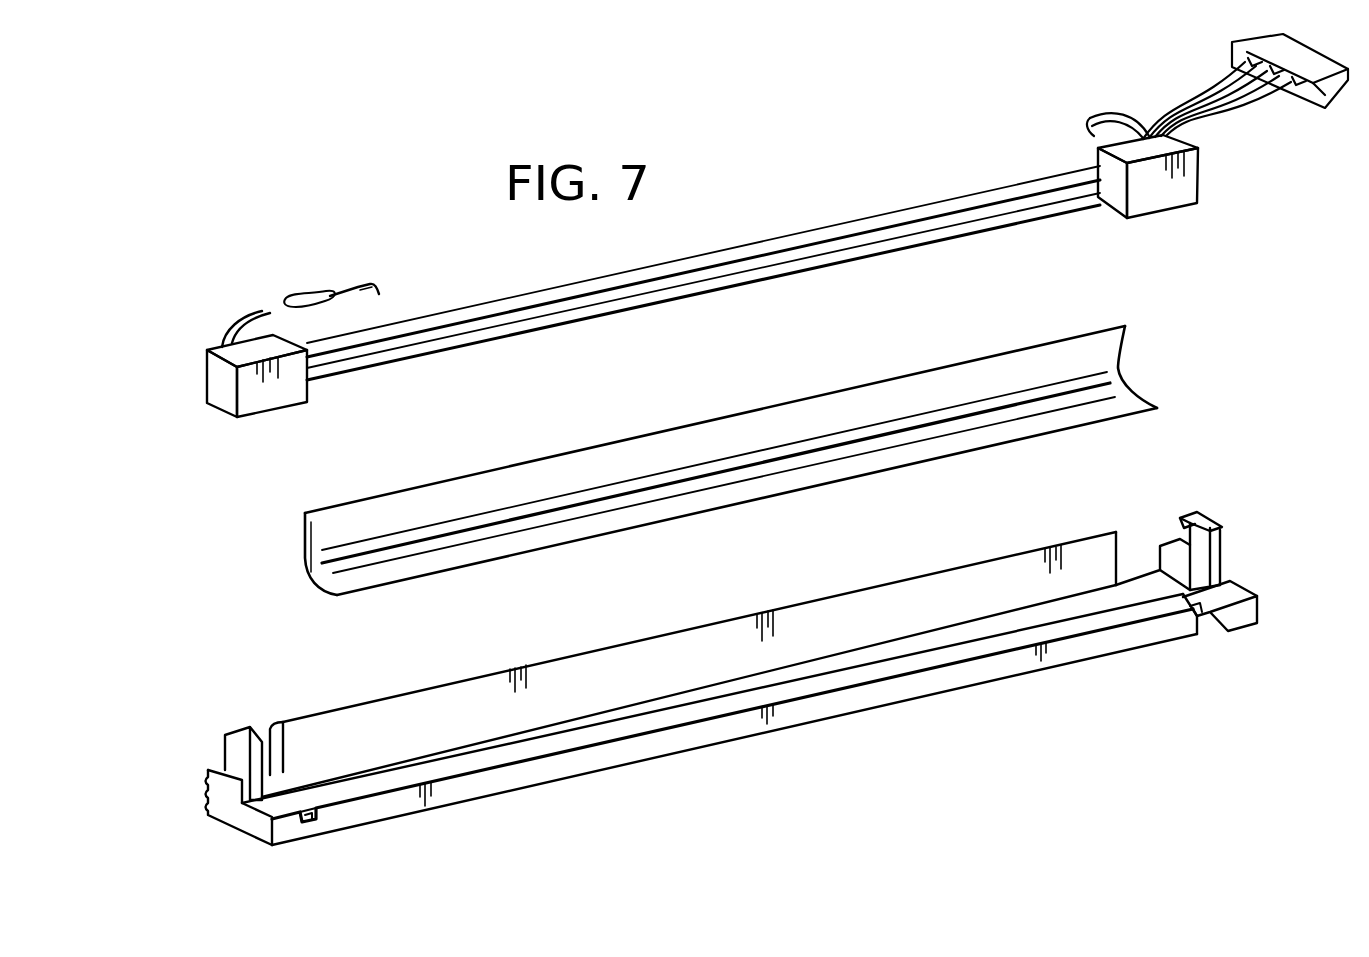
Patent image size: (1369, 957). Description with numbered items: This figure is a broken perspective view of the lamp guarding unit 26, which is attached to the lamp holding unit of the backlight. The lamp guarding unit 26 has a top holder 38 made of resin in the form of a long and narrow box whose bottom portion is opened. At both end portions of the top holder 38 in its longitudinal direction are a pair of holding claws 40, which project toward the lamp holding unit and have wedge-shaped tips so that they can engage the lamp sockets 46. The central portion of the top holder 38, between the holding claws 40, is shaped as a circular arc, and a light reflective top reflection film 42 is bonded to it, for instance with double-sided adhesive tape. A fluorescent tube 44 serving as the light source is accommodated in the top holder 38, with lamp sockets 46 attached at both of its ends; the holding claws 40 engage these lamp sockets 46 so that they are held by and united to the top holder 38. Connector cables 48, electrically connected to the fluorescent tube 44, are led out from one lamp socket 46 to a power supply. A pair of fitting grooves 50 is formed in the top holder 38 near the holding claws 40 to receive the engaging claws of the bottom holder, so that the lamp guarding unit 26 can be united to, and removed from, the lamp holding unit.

The lamp guarding unit 26 is at (236, 538).
The top holder 38 is at (722, 745).
The holding claws 40 is at (247, 730).
The top reflection film 42 is at (837, 388).
The fluorescent tube 44 is at (727, 250).
The lamp sockets 46 is at (281, 405).
The connector cables 48 is at (1250, 121).
The fitting grooves 50 is at (314, 821).